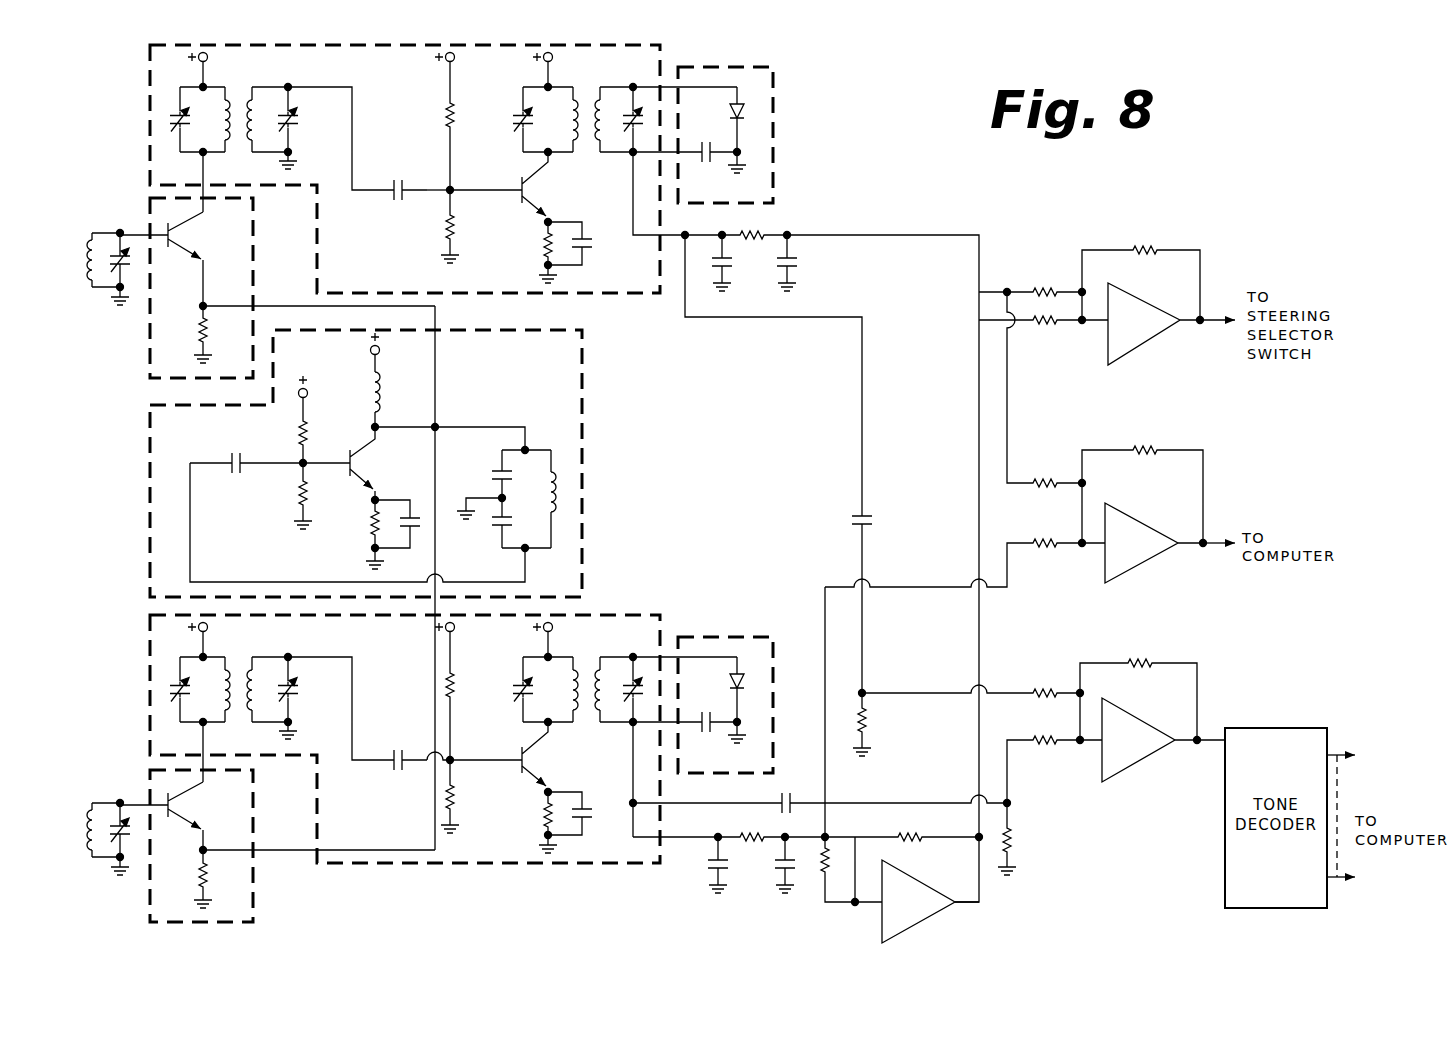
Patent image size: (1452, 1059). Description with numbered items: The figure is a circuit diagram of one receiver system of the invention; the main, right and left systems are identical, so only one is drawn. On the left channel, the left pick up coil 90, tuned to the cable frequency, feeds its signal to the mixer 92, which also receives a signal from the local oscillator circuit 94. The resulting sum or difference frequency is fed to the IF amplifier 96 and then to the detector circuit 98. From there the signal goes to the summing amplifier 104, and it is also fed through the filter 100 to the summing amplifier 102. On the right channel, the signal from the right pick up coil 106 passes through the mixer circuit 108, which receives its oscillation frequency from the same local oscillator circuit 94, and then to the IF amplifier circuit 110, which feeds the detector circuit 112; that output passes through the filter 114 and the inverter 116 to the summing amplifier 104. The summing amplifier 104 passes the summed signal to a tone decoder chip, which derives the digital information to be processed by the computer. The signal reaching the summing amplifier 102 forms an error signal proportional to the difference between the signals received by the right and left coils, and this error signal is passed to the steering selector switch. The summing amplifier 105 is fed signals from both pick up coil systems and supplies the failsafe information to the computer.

The left pick up coil 90 is at (92, 240).
The mixer 92 is at (148, 335).
The local oscillator circuit 94 is at (148, 492).
The IF amplifier 96 is at (148, 62).
The detector circuit 98 is at (775, 75).
The filter 100 is at (756, 256).
The summing amplifier 102 is at (1133, 335).
The summing amplifier 104 is at (1128, 752).
The summing amplifier 105 is at (1138, 555).
The right pick up coil 106 is at (92, 812).
The mixer circuit 108 is at (148, 882).
The IF amplifier circuit 110 is at (447, 870).
The detector circuit 112 is at (728, 635).
The filter 114 is at (752, 855).
The inverter 116 is at (912, 907).